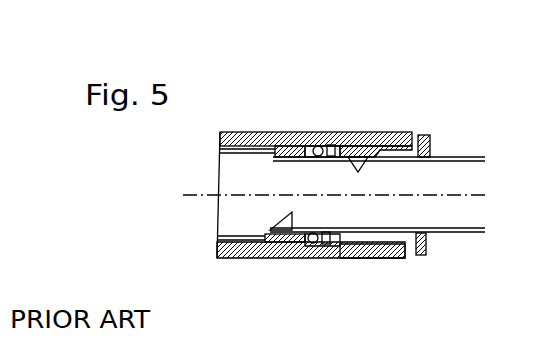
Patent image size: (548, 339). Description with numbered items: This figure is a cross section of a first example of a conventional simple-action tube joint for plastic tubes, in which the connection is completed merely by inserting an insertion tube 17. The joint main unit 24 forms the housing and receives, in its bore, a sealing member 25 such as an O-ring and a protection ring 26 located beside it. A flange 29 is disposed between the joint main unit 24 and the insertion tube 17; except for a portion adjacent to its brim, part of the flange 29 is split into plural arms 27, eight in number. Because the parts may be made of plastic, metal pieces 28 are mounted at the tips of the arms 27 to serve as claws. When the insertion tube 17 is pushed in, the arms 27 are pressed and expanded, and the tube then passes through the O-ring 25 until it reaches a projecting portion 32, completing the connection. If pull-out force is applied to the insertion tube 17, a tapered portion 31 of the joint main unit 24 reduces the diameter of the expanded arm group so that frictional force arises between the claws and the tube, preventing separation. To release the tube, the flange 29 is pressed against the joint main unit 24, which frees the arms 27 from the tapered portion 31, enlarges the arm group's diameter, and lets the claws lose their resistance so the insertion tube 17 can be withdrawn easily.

The insertion tube 17 is at (467, 157).
The joint main unit 24 is at (263, 131).
The sealing member 25 is at (317, 131).
The protection ring 26 is at (334, 131).
The arms 27 is at (363, 131).
The metal pieces 28 is at (393, 131).
The flange 29 is at (427, 135).
The tapered portion 31 is at (357, 258).
The projecting portion 32 is at (294, 258).